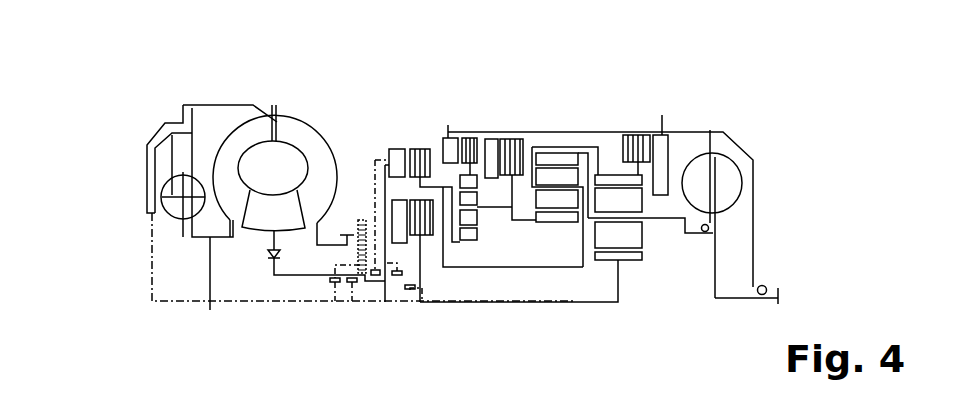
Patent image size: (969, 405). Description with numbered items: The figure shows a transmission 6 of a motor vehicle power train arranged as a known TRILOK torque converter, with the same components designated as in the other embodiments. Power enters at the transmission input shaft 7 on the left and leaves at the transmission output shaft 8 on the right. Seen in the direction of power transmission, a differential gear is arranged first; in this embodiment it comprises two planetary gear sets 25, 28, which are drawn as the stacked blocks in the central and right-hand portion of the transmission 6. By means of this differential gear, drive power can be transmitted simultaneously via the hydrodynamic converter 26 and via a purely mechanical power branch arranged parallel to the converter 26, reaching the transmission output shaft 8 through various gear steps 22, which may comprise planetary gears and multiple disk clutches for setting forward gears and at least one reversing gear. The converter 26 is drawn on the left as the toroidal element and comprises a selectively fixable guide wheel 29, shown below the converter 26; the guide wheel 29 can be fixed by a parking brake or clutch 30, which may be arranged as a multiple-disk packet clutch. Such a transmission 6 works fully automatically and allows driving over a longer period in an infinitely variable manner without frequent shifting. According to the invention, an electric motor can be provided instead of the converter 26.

The hydrodynamic converter 26 is at (284, 94).
The gear steps 22 is at (487, 111).
The transmission 6 is at (563, 89).
The transmission input shaft 7 is at (147, 310).
The guide wheel 29 is at (258, 232).
The clutch 30 is at (281, 258).
The planetary gear set 25 is at (556, 240).
The planetary gear set 28 is at (634, 285).
The transmission output shaft 8 is at (773, 290).